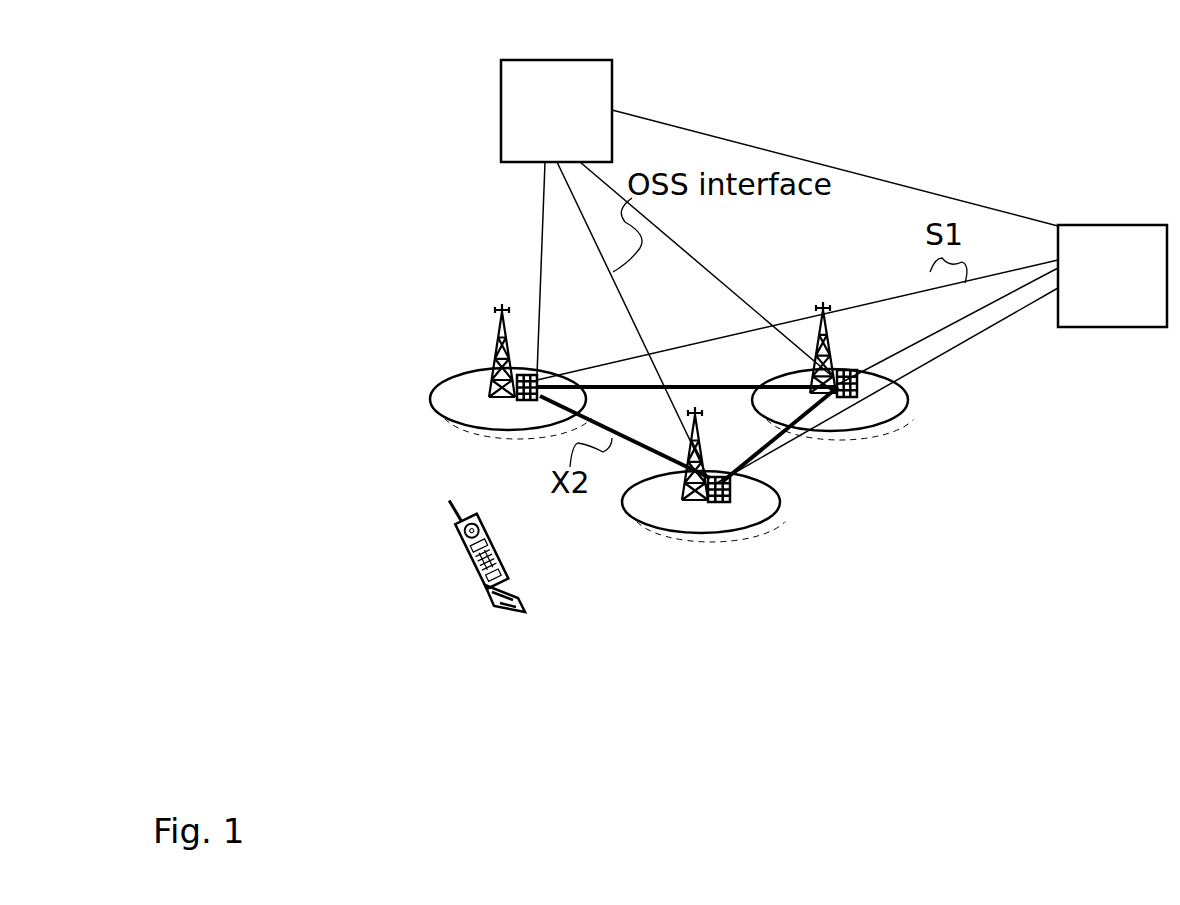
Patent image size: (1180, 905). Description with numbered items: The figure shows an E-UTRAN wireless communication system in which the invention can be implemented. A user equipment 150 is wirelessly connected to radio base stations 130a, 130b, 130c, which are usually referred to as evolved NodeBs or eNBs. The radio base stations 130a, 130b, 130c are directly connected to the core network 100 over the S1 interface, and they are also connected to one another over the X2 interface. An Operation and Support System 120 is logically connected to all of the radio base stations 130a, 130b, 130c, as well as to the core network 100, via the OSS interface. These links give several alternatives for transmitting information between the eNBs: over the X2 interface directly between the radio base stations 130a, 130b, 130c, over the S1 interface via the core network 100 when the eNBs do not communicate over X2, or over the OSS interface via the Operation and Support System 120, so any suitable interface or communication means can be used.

The Operation and Support System (OSS) 120 is at (556, 111).
The core network (CN) 100 is at (1112, 276).
The radio base station (eNB) 130a is at (487, 337).
The radio base station (eNB) 130b is at (770, 468).
The radio base station (eNB) 130c is at (970, 393).
The user equipment (UE) 150 is at (450, 597).